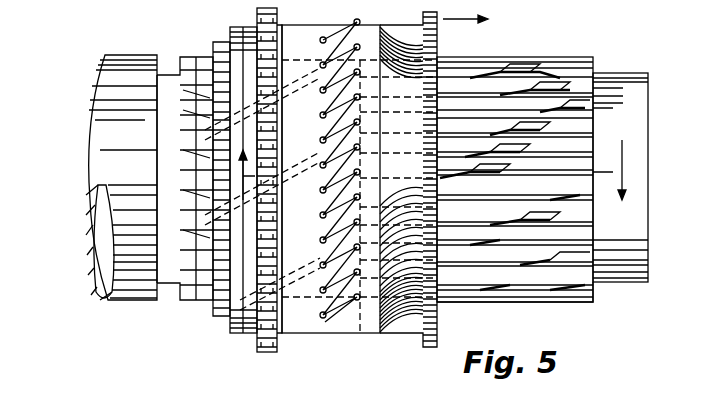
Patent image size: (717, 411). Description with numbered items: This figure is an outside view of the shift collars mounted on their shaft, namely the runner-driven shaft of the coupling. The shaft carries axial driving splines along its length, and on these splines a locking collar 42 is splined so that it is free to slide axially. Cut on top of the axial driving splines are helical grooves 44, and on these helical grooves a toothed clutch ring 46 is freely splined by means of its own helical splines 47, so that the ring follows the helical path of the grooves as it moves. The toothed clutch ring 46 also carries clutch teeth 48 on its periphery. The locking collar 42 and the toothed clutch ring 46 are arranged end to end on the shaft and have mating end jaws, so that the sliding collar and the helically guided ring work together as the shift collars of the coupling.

The locking collar 42 is at (375, 25).
The helical grooves 44 is at (467, 75).
The toothed clutch ring 46 is at (240, 27).
The helical splines 47 is at (300, 270).
The clutch teeth 48 is at (265, 353).